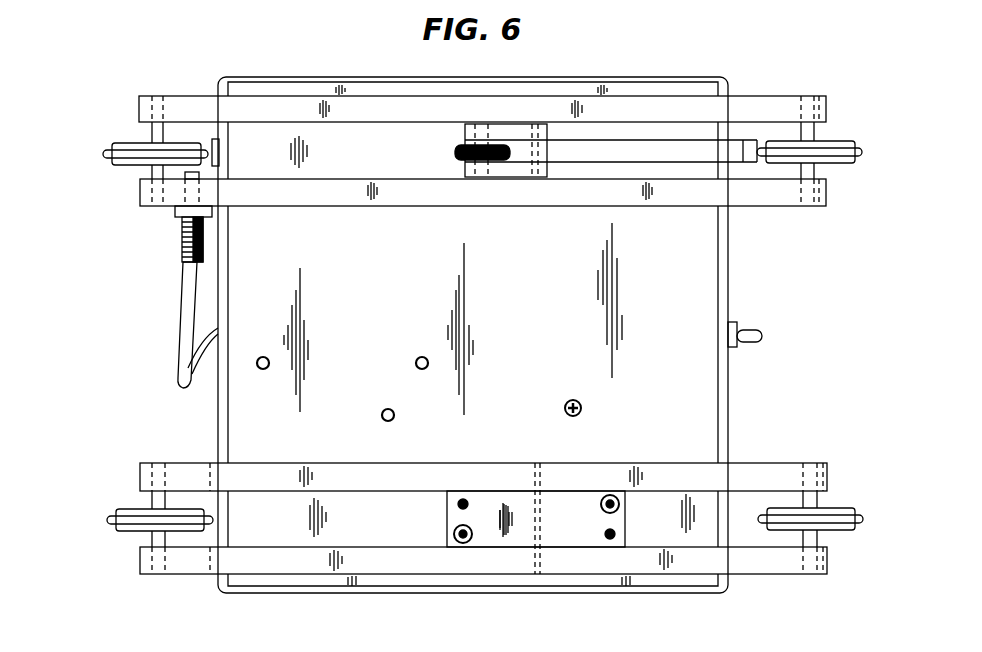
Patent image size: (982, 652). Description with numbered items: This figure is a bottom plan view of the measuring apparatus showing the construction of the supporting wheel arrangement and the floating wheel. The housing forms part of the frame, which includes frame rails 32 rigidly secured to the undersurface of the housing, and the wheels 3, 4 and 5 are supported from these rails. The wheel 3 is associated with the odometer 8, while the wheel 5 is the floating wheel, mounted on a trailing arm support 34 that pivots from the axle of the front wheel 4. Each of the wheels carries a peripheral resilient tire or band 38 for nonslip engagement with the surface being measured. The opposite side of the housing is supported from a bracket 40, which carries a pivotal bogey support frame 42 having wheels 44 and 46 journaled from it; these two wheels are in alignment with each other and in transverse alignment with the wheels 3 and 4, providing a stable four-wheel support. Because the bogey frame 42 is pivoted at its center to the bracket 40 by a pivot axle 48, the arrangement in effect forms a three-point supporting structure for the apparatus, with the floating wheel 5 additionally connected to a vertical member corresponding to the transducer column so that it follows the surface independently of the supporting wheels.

The wheel 3 is at (122, 143).
The front wheel 4 is at (845, 141).
The floating wheel 5 is at (455, 153).
The odometer 8 is at (194, 179).
The frame rails 32 is at (310, 108).
The trailing arm support 34 is at (628, 126).
The peripheral resilient tire 38 is at (124, 166).
The bracket 40 is at (581, 533).
The bogey support frame 42 is at (610, 478).
The wheel 44 is at (122, 509).
The wheel 46 is at (845, 509).
The pivot axle 48 is at (535, 463).